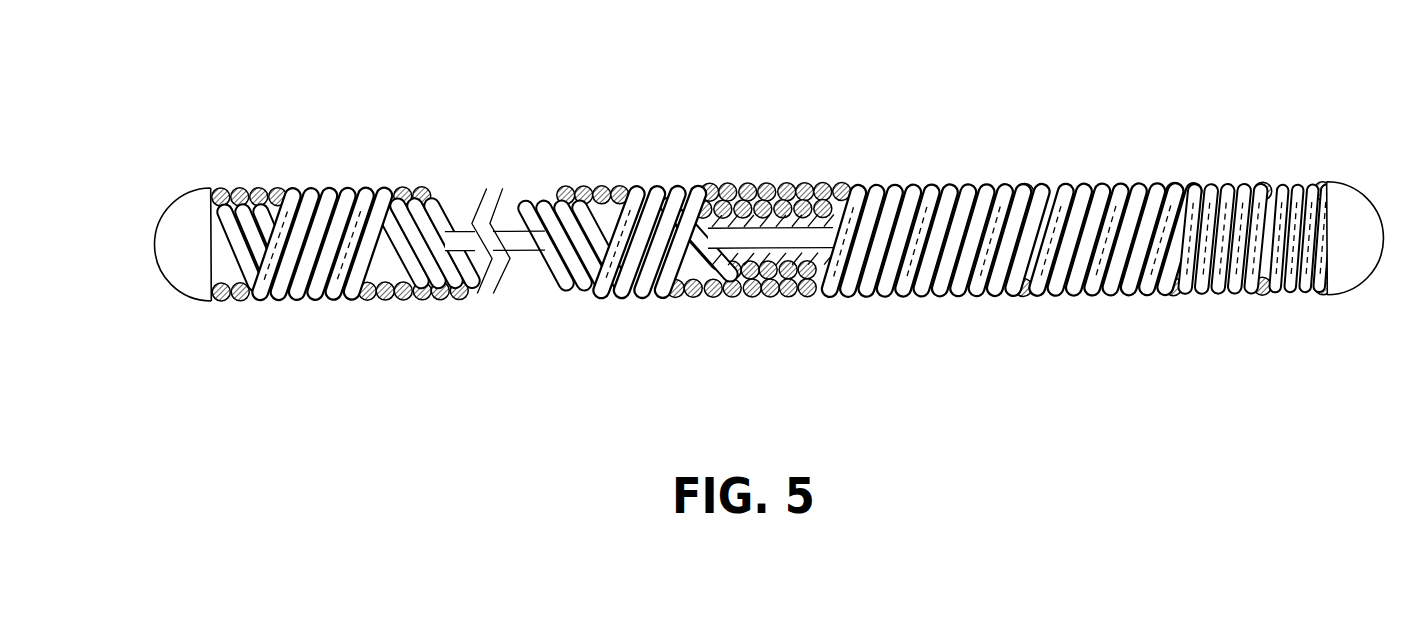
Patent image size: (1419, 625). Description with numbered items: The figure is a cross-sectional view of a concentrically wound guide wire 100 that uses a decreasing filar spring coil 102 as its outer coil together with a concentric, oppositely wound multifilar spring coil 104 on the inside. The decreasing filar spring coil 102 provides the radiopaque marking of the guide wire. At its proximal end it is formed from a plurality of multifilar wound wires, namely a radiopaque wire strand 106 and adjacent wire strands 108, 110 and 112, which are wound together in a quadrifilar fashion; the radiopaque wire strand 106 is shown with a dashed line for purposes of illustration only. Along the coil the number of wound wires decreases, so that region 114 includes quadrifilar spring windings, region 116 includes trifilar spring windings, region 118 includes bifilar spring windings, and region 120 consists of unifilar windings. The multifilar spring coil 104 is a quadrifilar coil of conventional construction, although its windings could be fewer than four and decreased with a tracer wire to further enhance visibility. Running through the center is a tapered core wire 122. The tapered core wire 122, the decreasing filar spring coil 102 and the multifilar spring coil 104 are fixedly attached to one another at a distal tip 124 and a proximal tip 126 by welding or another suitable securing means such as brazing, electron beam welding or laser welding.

The concentrically wound guide wire 100 is at (747, 209).
The decreasing filar spring coil 102 is at (497, 219).
The multifilar spring coil 104 is at (526, 268).
The radiopaque wire strand 106 is at (738, 223).
The wire strand 108 is at (543, 165).
The wire strand 110 is at (558, 150).
The wire strand 112 is at (572, 137).
The quadrifilar spring winding region 114 is at (1010, 320).
The trifilar spring winding region 116 is at (1170, 318).
The bifilar spring winding region 118 is at (1262, 318).
The unifilar winding region 120 is at (1325, 318).
The tapered core wire 122 is at (640, 267).
The distal tip 124 is at (1369, 253).
The proximal tip 126 is at (148, 244).